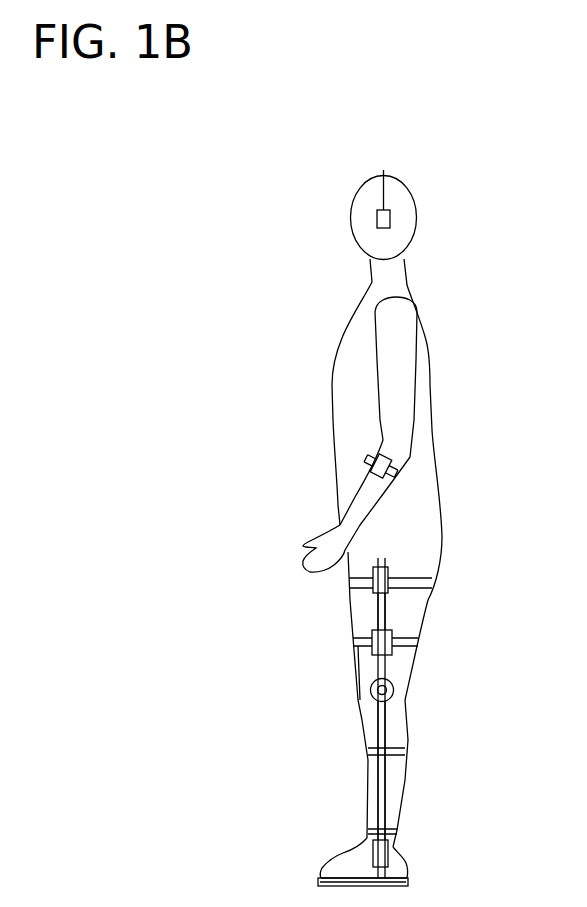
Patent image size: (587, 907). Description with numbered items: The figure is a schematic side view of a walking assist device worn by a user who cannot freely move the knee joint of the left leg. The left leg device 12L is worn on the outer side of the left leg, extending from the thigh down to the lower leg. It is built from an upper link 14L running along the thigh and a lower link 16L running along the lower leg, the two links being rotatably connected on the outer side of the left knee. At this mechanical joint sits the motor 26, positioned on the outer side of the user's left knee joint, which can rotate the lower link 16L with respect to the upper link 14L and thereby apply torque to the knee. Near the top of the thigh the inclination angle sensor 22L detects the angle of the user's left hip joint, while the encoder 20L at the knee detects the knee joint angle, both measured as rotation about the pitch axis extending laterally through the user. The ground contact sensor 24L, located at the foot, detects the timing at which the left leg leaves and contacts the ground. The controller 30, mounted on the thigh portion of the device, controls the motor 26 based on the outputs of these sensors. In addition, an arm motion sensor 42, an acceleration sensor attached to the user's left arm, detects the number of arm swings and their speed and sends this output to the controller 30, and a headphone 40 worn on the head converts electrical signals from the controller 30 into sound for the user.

The headphone 40 is at (390, 219).
The arm motion sensor 42 is at (383, 458).
The inclination angle sensor 22L is at (388, 578).
The upper link 14L is at (387, 614).
The controller 30 is at (392, 640).
The motor 26 is at (386, 676).
The encoder 20L is at (395, 692).
The left leg device 12L is at (388, 723).
The lower link 16L is at (381, 786).
The ground contact sensor 24L is at (385, 887).